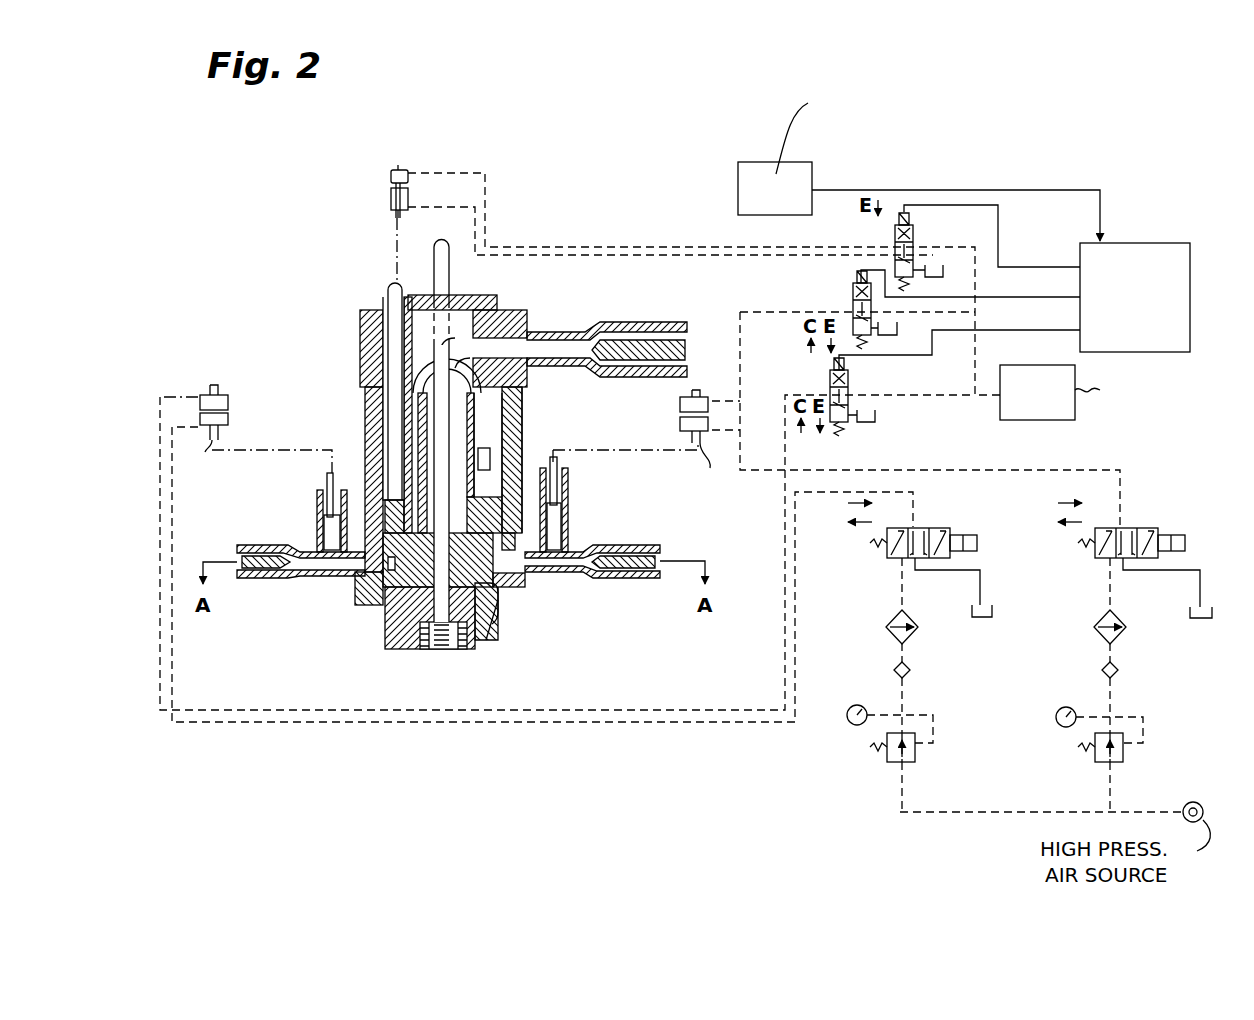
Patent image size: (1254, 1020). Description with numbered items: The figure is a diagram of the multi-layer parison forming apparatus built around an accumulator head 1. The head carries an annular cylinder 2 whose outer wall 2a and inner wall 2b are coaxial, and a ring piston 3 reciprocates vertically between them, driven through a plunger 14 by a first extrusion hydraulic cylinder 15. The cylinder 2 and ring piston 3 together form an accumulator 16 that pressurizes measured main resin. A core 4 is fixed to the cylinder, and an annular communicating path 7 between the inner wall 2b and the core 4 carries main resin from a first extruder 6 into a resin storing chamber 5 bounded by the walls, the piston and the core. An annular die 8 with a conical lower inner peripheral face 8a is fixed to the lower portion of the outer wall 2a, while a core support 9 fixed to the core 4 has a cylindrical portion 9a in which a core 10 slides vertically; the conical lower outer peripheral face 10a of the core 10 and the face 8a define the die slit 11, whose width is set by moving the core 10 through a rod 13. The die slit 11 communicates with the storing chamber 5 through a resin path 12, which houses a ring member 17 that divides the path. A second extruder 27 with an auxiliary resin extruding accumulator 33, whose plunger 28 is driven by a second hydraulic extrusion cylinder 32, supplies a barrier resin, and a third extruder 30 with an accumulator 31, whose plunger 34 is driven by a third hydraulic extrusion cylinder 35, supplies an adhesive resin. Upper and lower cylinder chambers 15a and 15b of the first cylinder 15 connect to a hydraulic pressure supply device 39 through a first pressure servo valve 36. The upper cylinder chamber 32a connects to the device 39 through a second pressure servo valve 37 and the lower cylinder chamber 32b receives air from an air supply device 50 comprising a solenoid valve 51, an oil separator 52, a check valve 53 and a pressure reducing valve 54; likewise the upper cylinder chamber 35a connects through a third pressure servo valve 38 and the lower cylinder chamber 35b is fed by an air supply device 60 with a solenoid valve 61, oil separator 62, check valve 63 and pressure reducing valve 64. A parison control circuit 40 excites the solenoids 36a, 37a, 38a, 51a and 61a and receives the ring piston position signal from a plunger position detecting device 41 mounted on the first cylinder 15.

The accumulator head 1 is at (540, 295).
The annular cylinder 2 is at (528, 413).
The outer wall 2a is at (527, 436).
The inner wall 2b is at (525, 397).
The ring piston 3 is at (484, 502).
The core 4 is at (487, 458).
The resin storing chamber 5 is at (364, 522).
The first extruder 6 is at (609, 325).
The annular communicating path 7 is at (488, 445).
The annular die 8 is at (496, 630).
The lower inner peripheral face 8a is at (494, 645).
The core support 9 is at (514, 585).
The cylindrical portion 9a is at (498, 617).
The core 10 is at (478, 652).
The lower outer peripheral face 10a is at (458, 650).
The die slit 11 is at (398, 650).
The resin path 12 is at (365, 607).
The rod 13 is at (450, 267).
The plunger 14 is at (372, 351).
The first extrusion hydraulic cylinder 15 is at (390, 180).
The upper cylinder chamber 15a is at (390, 172).
The lower cylinder chamber 15b is at (392, 205).
The accumulator 16 is at (350, 437).
The ring member 17 is at (364, 577).
The second extruder 27 is at (248, 544).
The plunger 28 is at (326, 478).
The third extruder 30 is at (626, 544).
The auxiliary resin extruding accumulator 31 is at (575, 509).
The second hydraulic extrusion cylinder 32 is at (231, 406).
The upper cylinder chamber 32a is at (285, 390).
The lower cylinder chamber 32b is at (229, 481).
The auxiliary resin extruding accumulator 33 is at (315, 505).
The plunger 34 is at (559, 465).
The third hydraulic extrusion cylinder 35 is at (679, 407).
The upper cylinder chamber 35a is at (686, 398).
The lower cylinder chamber 35b is at (727, 494).
The first pressure servo valve 36 is at (894, 243).
The solenoid 36a is at (910, 222).
The second pressure servo valve 37 is at (829, 387).
The solenoid 37a is at (848, 366).
The third pressure servo valve 38 is at (849, 303).
The solenoid 38a is at (858, 280).
The hydraulic pressure supply device 39 is at (1028, 420).
The parison control circuit 40 is at (1190, 247).
The plunger position detecting device 41 is at (812, 170).
The air supply device 50 is at (822, 745).
The solenoid valve 51 is at (885, 549).
The solenoid 51a is at (958, 538).
The oil separator 52 is at (886, 630).
The check valve 53 is at (893, 672).
The pressure reducing valve 54 is at (887, 757).
The air supply device 60 is at (1025, 742).
The solenoid valve 61 is at (1093, 549).
The solenoid 61a is at (1172, 538).
The oil separator 62 is at (1094, 630).
The check valve 63 is at (1101, 672).
The pressure reducing valve 64 is at (1093, 757).